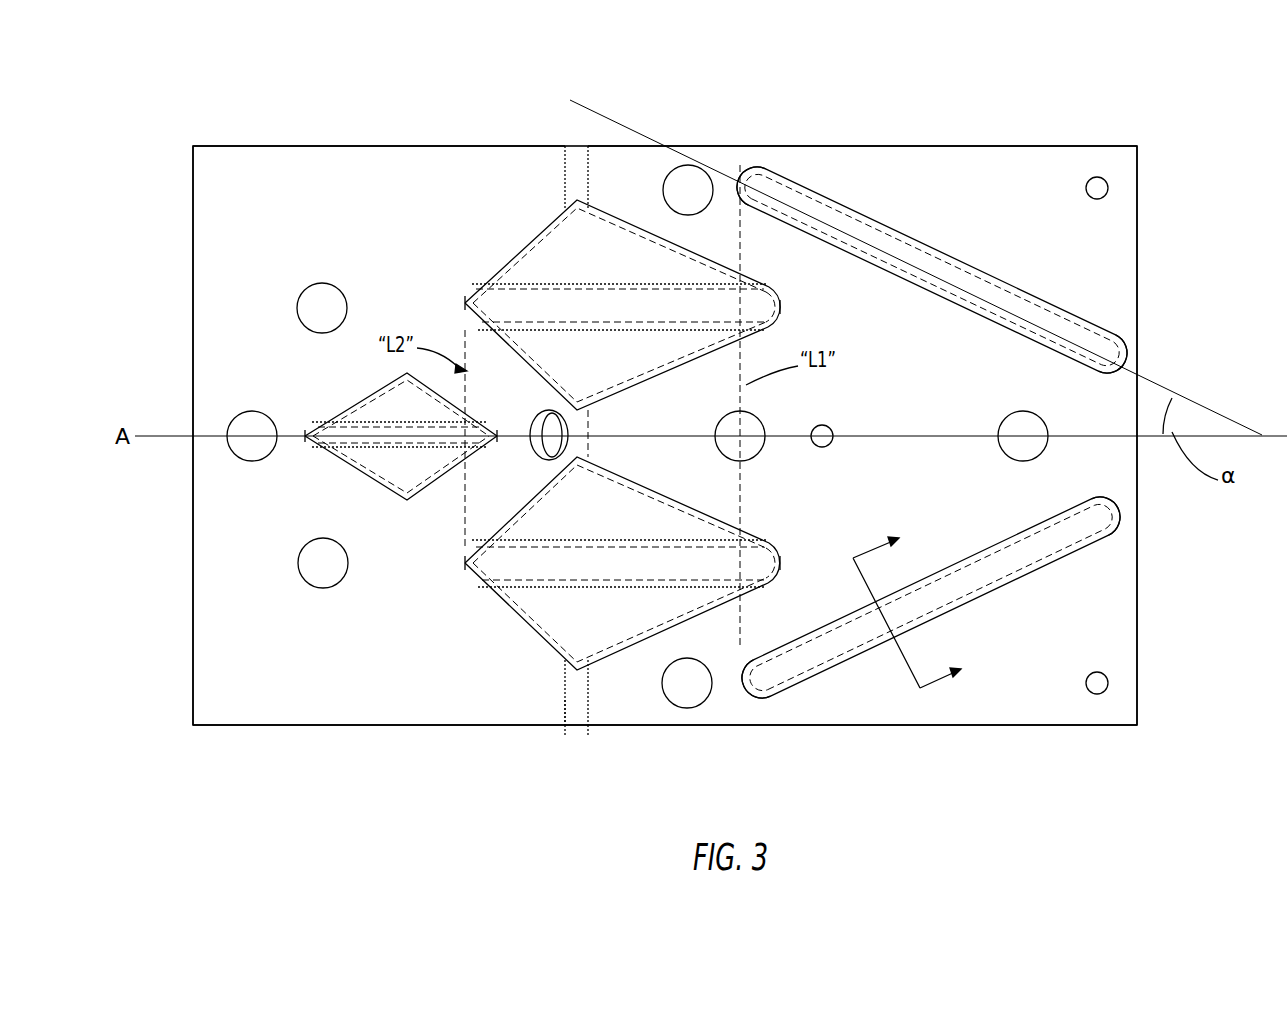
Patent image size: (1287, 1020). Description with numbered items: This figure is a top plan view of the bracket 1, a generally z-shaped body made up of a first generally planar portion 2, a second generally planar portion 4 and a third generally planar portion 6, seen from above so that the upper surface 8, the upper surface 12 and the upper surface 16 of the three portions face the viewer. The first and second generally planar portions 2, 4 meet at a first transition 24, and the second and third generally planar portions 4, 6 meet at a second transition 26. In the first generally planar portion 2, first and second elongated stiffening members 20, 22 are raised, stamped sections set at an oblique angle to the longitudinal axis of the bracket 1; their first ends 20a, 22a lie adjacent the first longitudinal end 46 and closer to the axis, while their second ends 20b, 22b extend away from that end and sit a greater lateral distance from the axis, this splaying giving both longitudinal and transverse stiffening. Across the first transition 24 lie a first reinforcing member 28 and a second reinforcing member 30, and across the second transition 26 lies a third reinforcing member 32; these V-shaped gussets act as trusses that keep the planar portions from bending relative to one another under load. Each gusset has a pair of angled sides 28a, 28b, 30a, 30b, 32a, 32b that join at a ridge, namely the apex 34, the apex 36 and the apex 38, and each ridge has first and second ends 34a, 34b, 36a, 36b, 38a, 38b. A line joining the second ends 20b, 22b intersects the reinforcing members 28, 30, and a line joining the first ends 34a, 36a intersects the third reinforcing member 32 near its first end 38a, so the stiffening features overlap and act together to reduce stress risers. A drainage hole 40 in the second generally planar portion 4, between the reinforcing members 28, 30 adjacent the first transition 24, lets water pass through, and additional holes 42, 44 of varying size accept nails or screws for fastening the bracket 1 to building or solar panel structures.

The bracket 1 is at (1203, 142).
The first generally planar portion 2 is at (998, 738).
The second generally planar portion 4 is at (573, 727).
The third generally planar portion 6 is at (393, 726).
The upper surface 8 is at (1022, 180).
The upper surface 12 is at (575, 158).
The upper surface 16 is at (300, 168).
The first elongated stiffening member 20 is at (957, 234).
The first end of first elongated stiffening member 20a is at (1118, 355).
The second end of first elongated stiffening member 20b is at (750, 182).
The second elongated stiffening member 22 is at (956, 623).
The first end of second elongated stiffening member 22a is at (1108, 500).
The second end of second elongated stiffening member 22b is at (737, 700).
The first transition 24 is at (590, 725).
The second transition 26 is at (563, 705).
The first reinforcing member 28 is at (614, 577).
The angled side of first reinforcing member 28a is at (611, 529).
The angled side of first reinforcing member 28b is at (613, 637).
The second reinforcing member 30 is at (635, 288).
The angled side of second reinforcing member 30a is at (609, 264).
The angled side of second reinforcing member 30b is at (613, 372).
The third reinforcing member 32 is at (397, 443).
The angled side of third reinforcing member 32a is at (416, 417).
The angled side of third reinforcing member 32b is at (418, 474).
The apex of first reinforcing member 34 is at (614, 569).
The first end of apex of first reinforcing member 34a is at (783, 563).
The second end of apex of first reinforcing member 34b is at (466, 567).
The apex of second reinforcing member 36 is at (635, 294).
The first end of apex of second reinforcing member 36a is at (782, 306).
The second end of apex of second reinforcing member 36b is at (465, 303).
The apex of third reinforcing member 38 is at (397, 452).
The first end of apex of third reinforcing member 38a is at (305, 448).
The second end of apex of third reinforcing member 38b is at (492, 432).
The drainage hole 40 is at (588, 430).
The hole 42 is at (1095, 203).
The hole 44 is at (325, 302).
The first longitudinal end 46 is at (1150, 643).